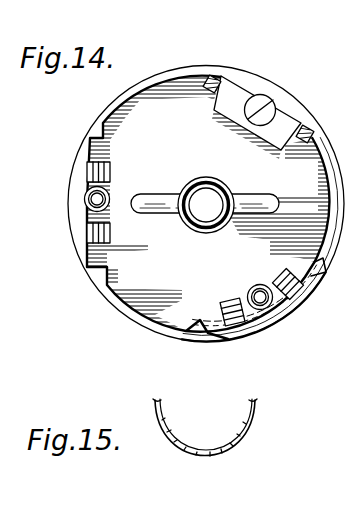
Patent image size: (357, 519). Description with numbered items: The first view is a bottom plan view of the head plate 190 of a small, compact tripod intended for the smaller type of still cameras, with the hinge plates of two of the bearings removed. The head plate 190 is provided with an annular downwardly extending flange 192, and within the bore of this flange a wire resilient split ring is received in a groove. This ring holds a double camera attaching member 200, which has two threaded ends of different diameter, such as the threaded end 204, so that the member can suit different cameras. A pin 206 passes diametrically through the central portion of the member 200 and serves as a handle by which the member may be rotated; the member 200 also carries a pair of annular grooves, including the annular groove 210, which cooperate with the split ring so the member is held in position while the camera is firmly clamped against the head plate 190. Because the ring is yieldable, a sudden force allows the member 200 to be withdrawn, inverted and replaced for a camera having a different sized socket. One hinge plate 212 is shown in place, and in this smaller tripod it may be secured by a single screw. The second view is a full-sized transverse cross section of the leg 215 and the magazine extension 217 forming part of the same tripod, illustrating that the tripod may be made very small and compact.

In FIG. 14, the head plate 190 is at (308, 309).
In FIG. 14, the annular downwardly extending flange 192 is at (232, 188).
In FIG. 14, the double camera attaching member 200 is at (192, 182).
In FIG. 14, the threaded end 204 is at (202, 212).
In FIG. 14, the pin 206 is at (146, 200).
In FIG. 14, the annular groove 210 is at (259, 103).
In FIG. 14, the hinge plate 212 is at (233, 92).
In FIG. 15, the leg 215 is at (220, 448).
In FIG. 15, the magazine extension 217 is at (217, 452).